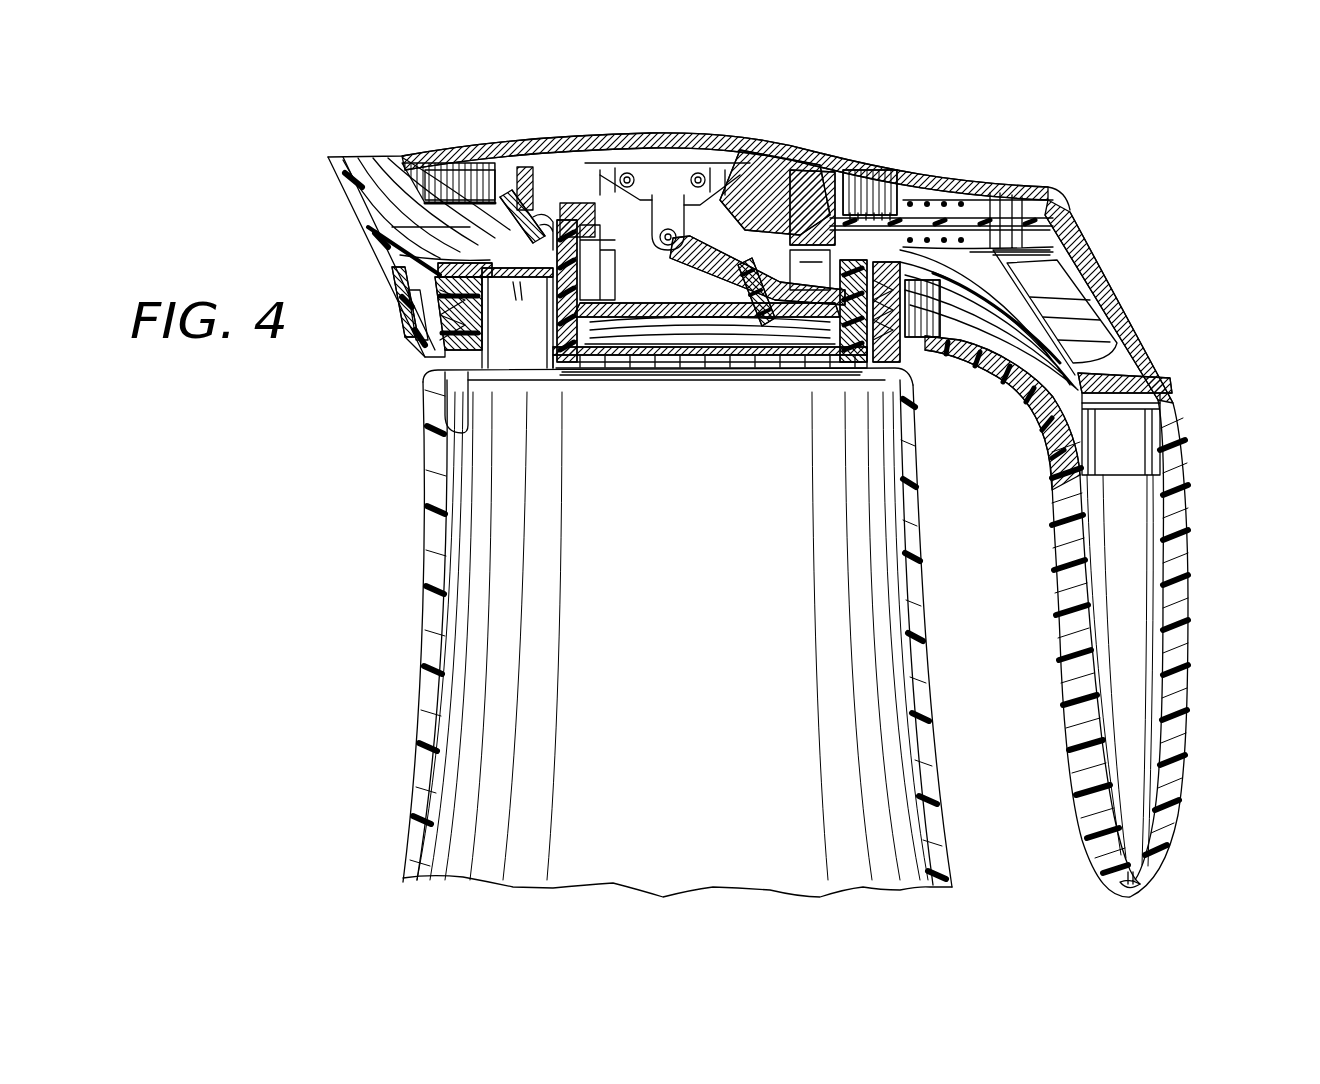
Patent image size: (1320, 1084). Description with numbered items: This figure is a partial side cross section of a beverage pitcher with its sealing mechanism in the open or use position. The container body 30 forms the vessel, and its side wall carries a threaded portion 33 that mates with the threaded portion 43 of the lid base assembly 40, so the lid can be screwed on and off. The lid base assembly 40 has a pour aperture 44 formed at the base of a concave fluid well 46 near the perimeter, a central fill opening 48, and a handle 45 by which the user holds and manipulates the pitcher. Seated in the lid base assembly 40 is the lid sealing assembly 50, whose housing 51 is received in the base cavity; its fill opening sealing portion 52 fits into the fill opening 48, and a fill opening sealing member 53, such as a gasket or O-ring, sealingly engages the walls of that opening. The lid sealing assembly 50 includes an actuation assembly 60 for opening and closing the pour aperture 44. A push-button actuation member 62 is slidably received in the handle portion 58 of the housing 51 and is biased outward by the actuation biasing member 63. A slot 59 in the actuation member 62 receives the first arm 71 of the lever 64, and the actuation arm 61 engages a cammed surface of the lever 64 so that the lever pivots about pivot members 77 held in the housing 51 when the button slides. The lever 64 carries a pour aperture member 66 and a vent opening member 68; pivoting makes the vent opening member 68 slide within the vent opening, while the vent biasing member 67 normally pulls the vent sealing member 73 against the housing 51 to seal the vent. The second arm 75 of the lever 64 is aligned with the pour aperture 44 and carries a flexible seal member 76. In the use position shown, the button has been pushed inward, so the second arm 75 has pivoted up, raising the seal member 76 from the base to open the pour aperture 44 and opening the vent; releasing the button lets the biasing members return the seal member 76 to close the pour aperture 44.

The container body 30 is at (430, 695).
The threaded portion 33 is at (442, 433).
The lid base assembly 40 is at (355, 207).
The threaded portion 43 is at (413, 327).
The pour aperture 44 is at (403, 311).
The handle 45 is at (1190, 634).
The fluid well 46 is at (386, 256).
The fill opening 48 is at (567, 368).
The lid sealing assembly 50 is at (679, 260).
The housing 51 is at (440, 152).
The fill opening sealing portion 52 is at (644, 368).
The fill opening sealing member 53 is at (800, 320).
The handle portion 58 is at (1012, 342).
The slot 59 is at (817, 172).
The actuation assembly 60 is at (1082, 515).
The actuation arm 61 is at (917, 187).
The actuation member 62 is at (1093, 289).
The actuation biasing member 63 is at (1007, 187).
The lever 64 is at (722, 245).
The pour aperture member 66 is at (556, 140).
The vent biasing member 67 is at (793, 322).
The vent opening member 68 is at (757, 145).
The first arm 71 is at (836, 182).
The vent sealing member 73 is at (718, 320).
The second arm 75 is at (500, 217).
The seal member 76 is at (513, 247).
The pivot members 77 is at (668, 200).